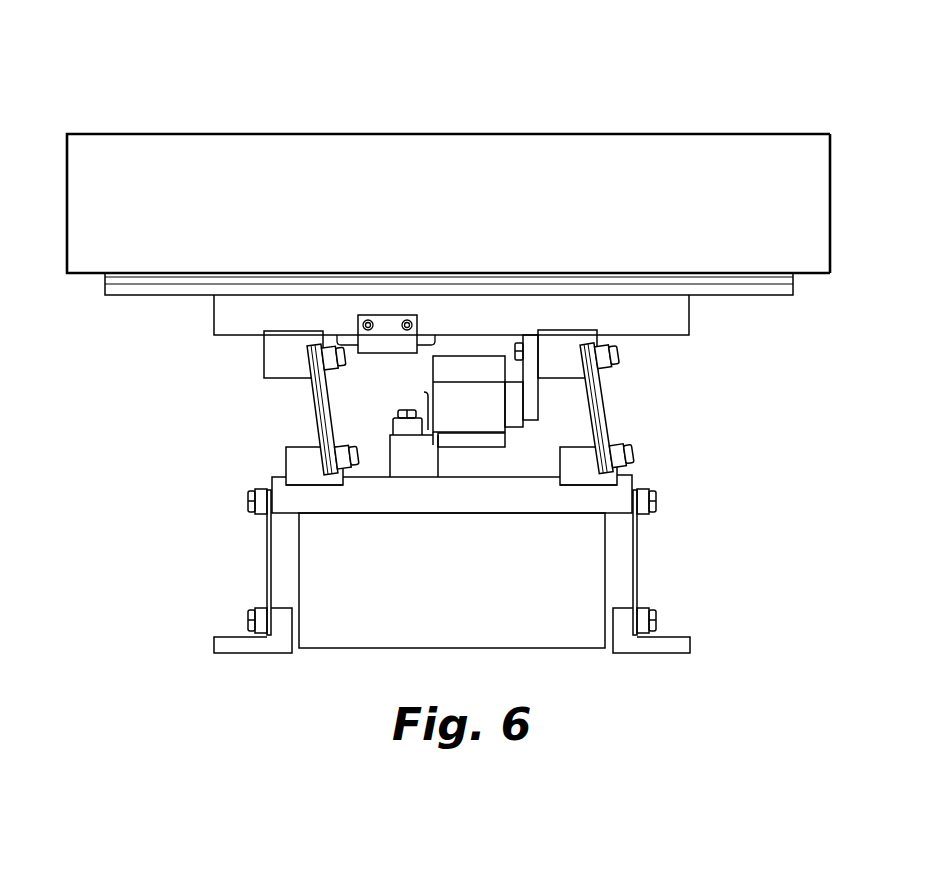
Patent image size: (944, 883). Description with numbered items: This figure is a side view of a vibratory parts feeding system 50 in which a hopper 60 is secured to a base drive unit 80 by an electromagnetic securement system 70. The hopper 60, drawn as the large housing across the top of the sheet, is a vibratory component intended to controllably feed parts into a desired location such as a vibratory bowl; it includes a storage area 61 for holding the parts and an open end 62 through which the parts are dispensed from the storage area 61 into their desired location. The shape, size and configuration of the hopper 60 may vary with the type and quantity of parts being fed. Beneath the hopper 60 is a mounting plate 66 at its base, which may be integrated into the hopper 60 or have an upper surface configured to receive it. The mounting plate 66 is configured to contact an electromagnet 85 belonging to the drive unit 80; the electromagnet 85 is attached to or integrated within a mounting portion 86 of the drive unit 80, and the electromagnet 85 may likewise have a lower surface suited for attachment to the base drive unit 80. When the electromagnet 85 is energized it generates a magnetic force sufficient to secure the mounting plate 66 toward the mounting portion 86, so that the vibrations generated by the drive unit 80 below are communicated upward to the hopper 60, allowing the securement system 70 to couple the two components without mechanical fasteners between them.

The vibratory parts feeding system 50 is at (131, 74).
The hopper 60 is at (749, 118).
The storage area 61 is at (403, 206).
The open end 62 is at (815, 203).
The mounting plate 66 is at (115, 290).
The electromagnetic securement system 70 is at (622, 348).
The base drive unit 80 is at (551, 656).
The electromagnet 85 is at (345, 343).
The mounting portion 86 is at (672, 315).